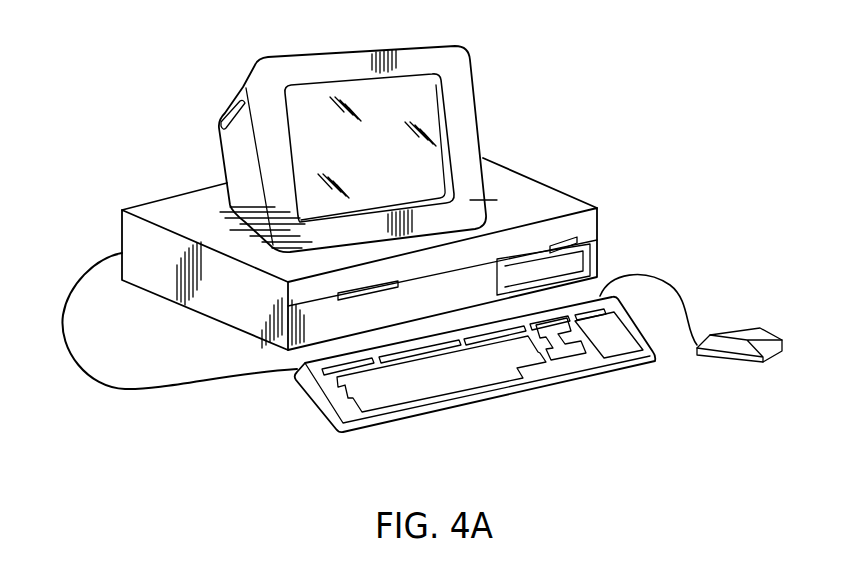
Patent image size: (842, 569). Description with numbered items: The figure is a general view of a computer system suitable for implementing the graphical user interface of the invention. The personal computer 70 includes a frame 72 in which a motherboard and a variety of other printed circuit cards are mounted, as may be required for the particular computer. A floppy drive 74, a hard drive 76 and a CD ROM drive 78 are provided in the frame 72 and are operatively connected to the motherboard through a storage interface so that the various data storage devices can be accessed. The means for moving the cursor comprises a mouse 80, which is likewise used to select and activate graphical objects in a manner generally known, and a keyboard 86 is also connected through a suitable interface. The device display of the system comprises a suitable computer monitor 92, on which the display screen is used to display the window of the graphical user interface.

The personal computer 70 is at (522, 416).
The frame 72 is at (590, 242).
The floppy drive 74 is at (562, 242).
The hard drive 76 is at (576, 265).
The CD ROM drive 78 is at (358, 296).
The mouse 80 is at (772, 335).
The keyboard 86 is at (610, 372).
The computer monitor 92 is at (470, 87).